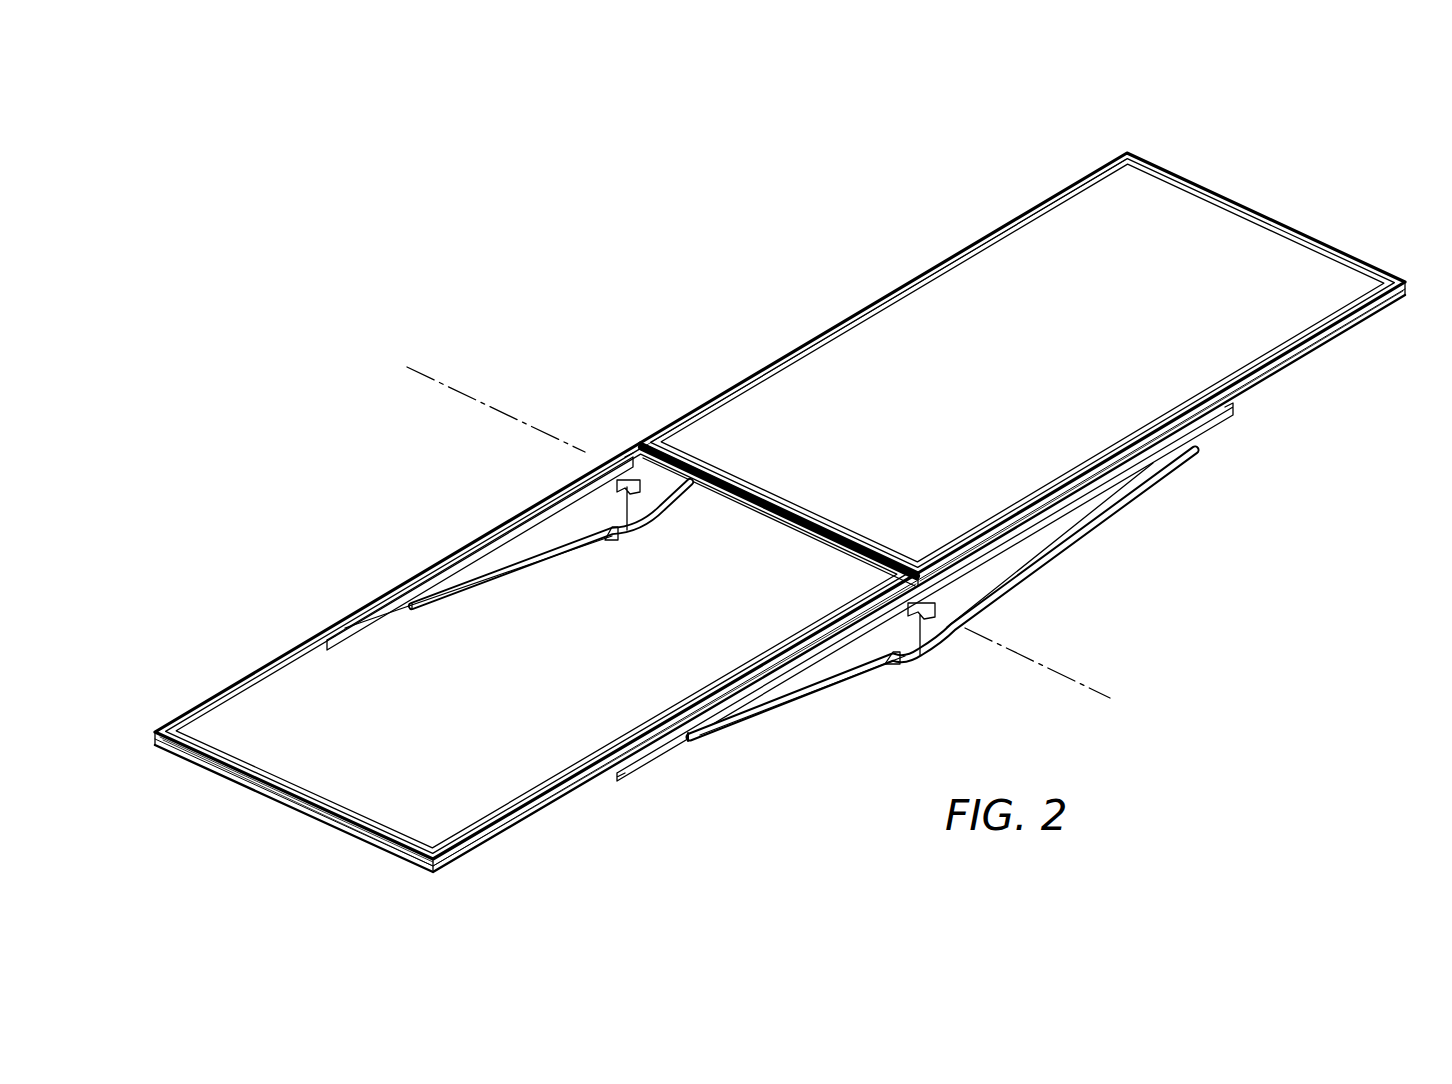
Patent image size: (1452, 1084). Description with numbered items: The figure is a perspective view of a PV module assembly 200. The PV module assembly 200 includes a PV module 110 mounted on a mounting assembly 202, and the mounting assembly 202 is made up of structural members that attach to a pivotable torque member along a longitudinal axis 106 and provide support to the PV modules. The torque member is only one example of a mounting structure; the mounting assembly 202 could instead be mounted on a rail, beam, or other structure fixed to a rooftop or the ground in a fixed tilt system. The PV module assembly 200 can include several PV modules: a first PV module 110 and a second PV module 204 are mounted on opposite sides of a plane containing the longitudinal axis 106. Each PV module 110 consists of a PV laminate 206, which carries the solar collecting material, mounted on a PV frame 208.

The PV module assembly 200 is at (529, 273).
The PV module 110 is at (1274, 183).
The second PV module 204 is at (320, 822).
The PV laminate 206 is at (1278, 268).
The PV frame 208 is at (1013, 215).
The mounting assembly 202 is at (1200, 440).
The longitudinal axis 106 is at (1088, 683).